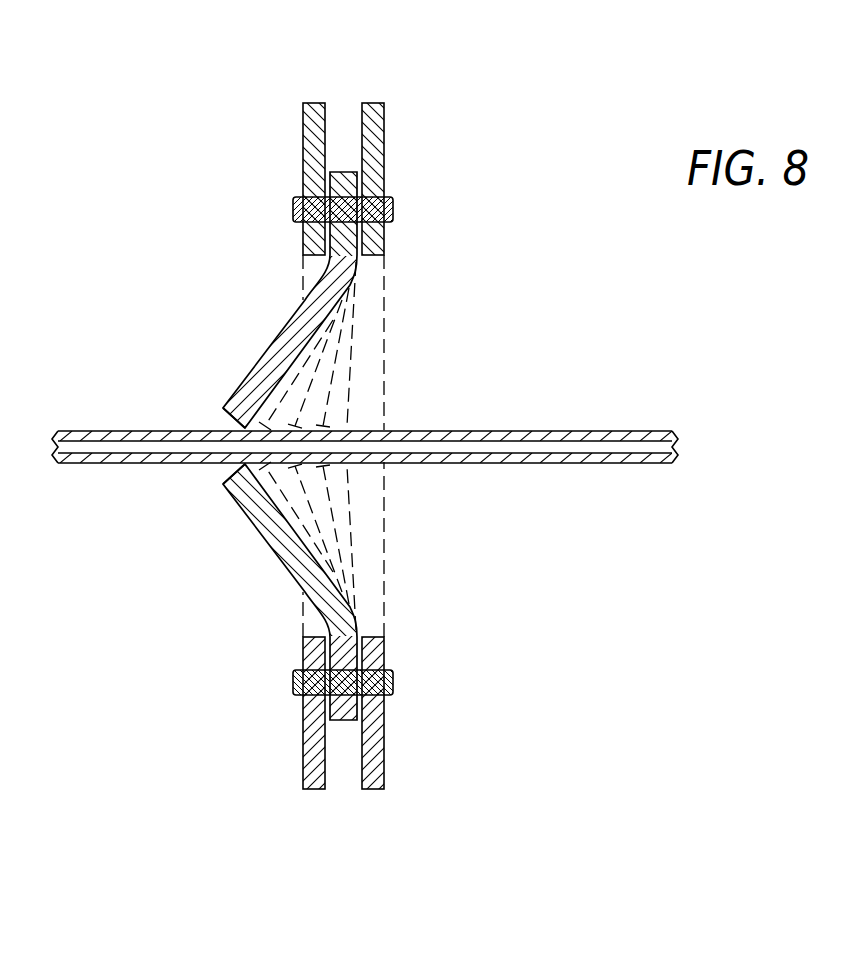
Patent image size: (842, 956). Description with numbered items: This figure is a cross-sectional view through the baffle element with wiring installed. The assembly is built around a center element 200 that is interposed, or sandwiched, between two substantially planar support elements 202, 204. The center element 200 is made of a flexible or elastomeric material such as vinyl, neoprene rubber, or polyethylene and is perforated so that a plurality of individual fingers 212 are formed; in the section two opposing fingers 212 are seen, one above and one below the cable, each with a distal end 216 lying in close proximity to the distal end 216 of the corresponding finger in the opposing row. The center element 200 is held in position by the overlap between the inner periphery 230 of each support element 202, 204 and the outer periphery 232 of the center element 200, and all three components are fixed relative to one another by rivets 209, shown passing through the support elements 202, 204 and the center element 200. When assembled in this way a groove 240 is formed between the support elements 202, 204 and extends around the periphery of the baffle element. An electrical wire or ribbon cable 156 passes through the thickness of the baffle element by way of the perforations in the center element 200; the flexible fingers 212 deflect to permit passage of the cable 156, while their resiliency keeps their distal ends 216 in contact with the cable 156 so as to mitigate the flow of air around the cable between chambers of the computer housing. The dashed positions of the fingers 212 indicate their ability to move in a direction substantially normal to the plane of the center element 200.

The electrical wire or ribbon cable 156 is at (645, 431).
The center element 200 is at (357, 266).
The support element 202 is at (384, 103).
The support element 204 is at (303, 118).
The rivet 209 is at (393, 210).
The finger 212 is at (315, 403).
The distal end 216 is at (222, 404).
The inner periphery 230 is at (385, 243).
The outer periphery 232 is at (355, 190).
The groove 240 is at (347, 118).